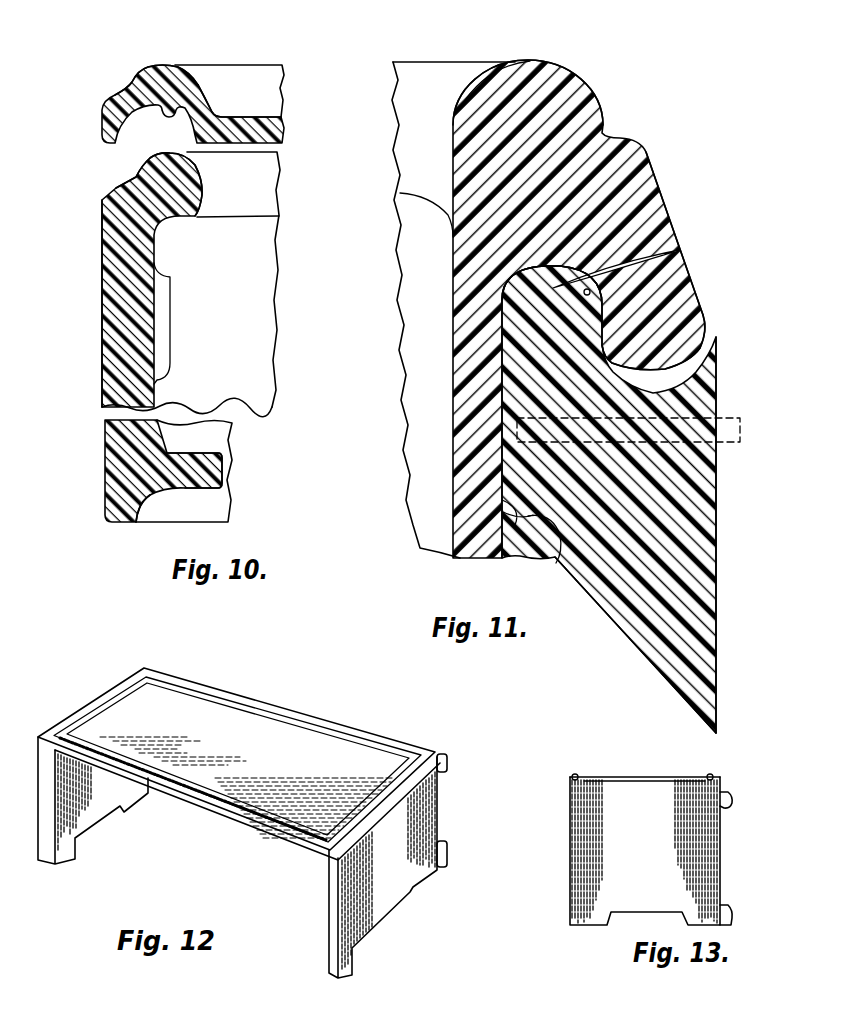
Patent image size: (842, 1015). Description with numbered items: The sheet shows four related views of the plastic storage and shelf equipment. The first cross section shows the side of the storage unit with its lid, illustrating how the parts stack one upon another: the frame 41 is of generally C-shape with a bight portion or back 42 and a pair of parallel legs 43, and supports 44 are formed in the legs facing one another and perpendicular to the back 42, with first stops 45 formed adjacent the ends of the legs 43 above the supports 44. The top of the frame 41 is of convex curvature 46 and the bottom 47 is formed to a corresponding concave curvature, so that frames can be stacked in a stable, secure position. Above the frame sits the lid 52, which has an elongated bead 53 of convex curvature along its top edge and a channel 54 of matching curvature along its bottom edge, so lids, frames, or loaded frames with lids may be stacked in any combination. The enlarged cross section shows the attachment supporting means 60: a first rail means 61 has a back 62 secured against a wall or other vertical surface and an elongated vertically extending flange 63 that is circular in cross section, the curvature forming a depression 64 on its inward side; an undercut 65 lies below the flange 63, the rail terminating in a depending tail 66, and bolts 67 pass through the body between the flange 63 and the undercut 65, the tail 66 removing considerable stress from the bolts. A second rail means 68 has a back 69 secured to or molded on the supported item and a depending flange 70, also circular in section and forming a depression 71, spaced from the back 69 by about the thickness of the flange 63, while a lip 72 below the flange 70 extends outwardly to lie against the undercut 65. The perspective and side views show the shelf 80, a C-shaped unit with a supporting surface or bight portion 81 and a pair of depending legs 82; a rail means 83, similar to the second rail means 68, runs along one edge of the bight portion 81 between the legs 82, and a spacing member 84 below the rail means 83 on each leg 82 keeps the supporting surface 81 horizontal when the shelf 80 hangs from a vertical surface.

In FIG. 10, the frame 41 is at (100, 263).
In FIG. 10, the back 42 is at (233, 337).
In FIG. 10, the legs 43 is at (110, 338).
In FIG. 10, the supports 44 is at (200, 453).
In FIG. 10, the first stops 45 is at (160, 303).
In FIG. 10, the convex curvature 46 is at (145, 165).
In FIG. 10, the bottom 47 is at (140, 524).
In FIG. 10, the lid 52 is at (173, 63).
In FIG. 10, the elongated bead 53 is at (145, 68).
In FIG. 10, the channel 54 is at (188, 92).
In FIG. 11, the attachment supporting means 60 is at (630, 100).
In FIG. 11, the first rail means 61 is at (620, 632).
In FIG. 11, the back 62 is at (717, 514).
In FIG. 11, the vertically extending flange 63 is at (653, 207).
In FIG. 11, the depression 64 is at (608, 360).
In FIG. 11, the undercut 65 is at (510, 557).
In FIG. 11, the depending tail 66 is at (647, 670).
In FIG. 11, the bolts 67 is at (683, 418).
In FIG. 11, the second rail means 68 is at (583, 82).
In FIG. 11, the back 69 is at (453, 303).
In FIG. 11, the depending flange 70 is at (648, 305).
In FIG. 11, the depression 71 is at (590, 292).
In FIG. 11, the lip 72 is at (562, 540).
In FIG. 12, the shelf 80 is at (210, 680).
In FIG. 13, the shelf 80 is at (568, 817).
In FIG. 12, the supporting surface 81 is at (233, 737).
In FIG. 13, the supporting surface 81 is at (582, 777).
In FIG. 12, the depending legs 82 is at (78, 810).
In FIG. 13, the depending legs 82 is at (583, 857).
In FIG. 12, the rail means 83 is at (445, 760).
In FIG. 13, the rail means 83 is at (729, 795).
In FIG. 12, the spacing member 84 is at (445, 853).
In FIG. 13, the spacing member 84 is at (730, 908).